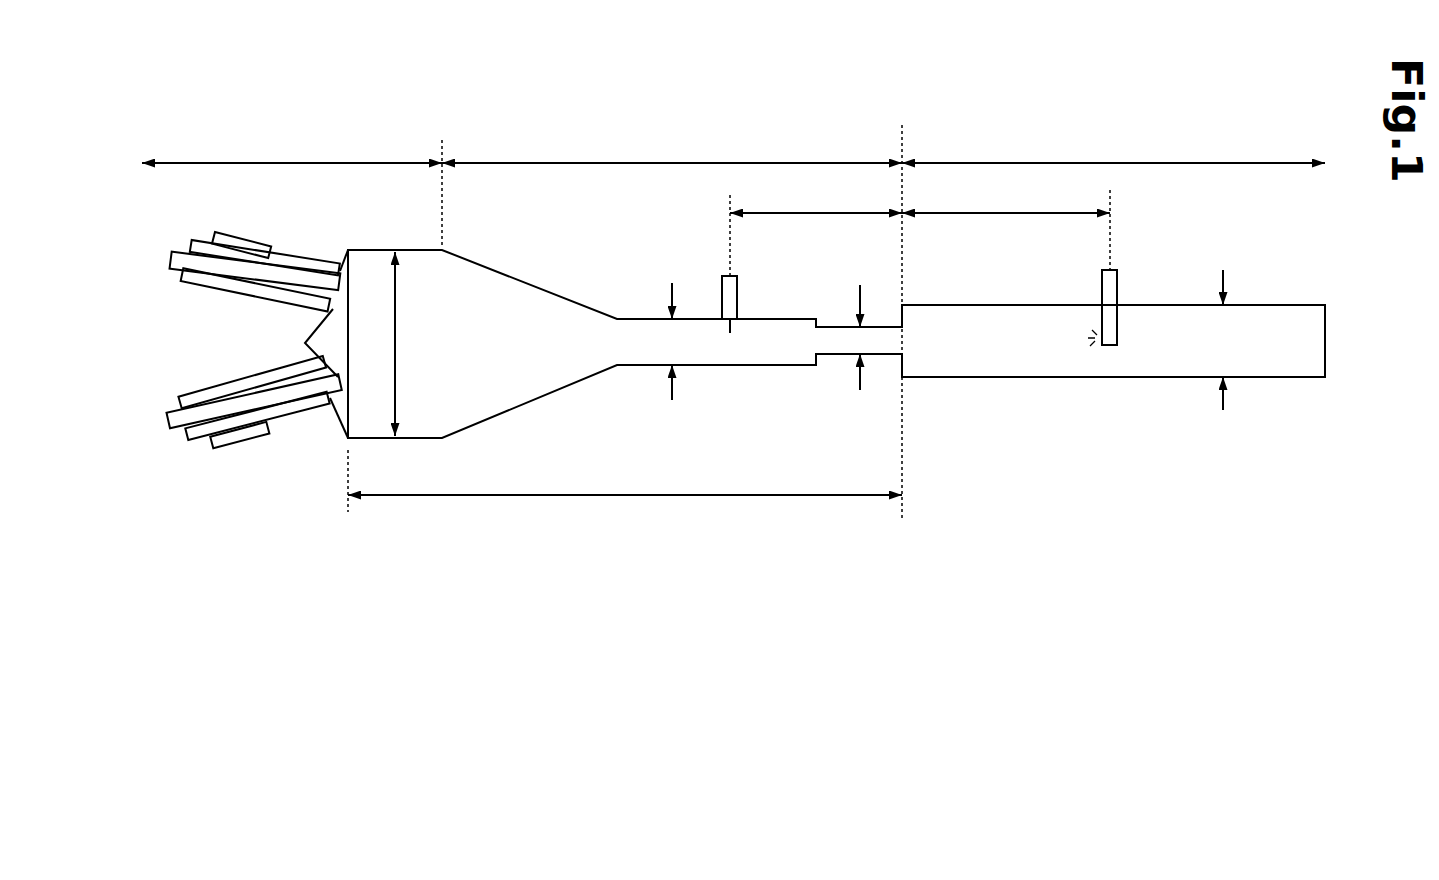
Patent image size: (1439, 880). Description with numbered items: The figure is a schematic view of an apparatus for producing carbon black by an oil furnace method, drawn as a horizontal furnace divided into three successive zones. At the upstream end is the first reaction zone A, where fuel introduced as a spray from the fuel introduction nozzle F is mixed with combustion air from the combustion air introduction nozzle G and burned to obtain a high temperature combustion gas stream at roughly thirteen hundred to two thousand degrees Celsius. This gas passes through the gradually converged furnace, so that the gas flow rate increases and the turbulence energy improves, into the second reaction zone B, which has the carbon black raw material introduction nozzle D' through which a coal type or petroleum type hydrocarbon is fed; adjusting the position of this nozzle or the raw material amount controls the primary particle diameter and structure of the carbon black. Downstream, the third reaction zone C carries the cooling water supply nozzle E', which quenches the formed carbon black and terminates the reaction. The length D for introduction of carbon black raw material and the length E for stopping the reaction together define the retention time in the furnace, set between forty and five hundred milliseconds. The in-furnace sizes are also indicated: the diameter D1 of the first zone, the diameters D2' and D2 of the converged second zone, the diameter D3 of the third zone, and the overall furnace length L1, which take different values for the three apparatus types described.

The first reaction zone A is at (292, 147).
The second reaction zone B is at (672, 147).
The third reaction zone C is at (1113, 147).
The length for introduction of carbon black raw material D is at (816, 199).
The length for stopping the reaction E is at (1006, 199).
The in-furnace size D1 is at (412, 344).
The in-furnace size D2' is at (678, 332).
The carbon black raw material introduction nozzle D' is at (744, 304).
The in-furnace size D2 is at (868, 327).
The cooling water supply nozzle E' is at (1116, 308).
The in-furnace size D3 is at (1231, 333).
The in-furnace size L1 is at (625, 483).
The fuel introduction nozzle F is at (166, 261).
The combustion air introduction nozzle G is at (272, 212).